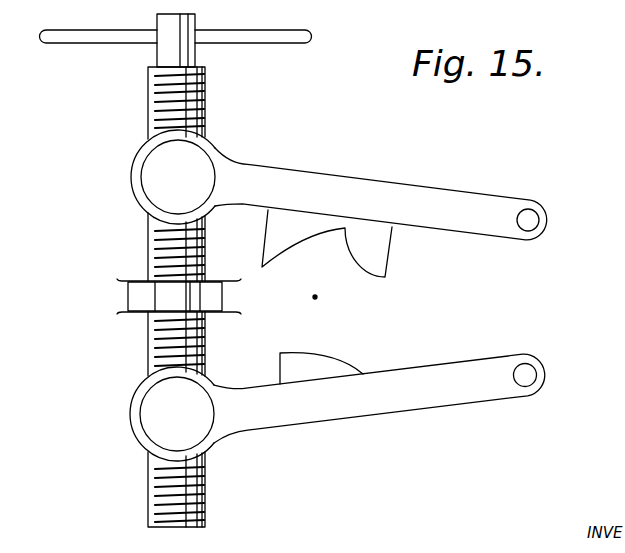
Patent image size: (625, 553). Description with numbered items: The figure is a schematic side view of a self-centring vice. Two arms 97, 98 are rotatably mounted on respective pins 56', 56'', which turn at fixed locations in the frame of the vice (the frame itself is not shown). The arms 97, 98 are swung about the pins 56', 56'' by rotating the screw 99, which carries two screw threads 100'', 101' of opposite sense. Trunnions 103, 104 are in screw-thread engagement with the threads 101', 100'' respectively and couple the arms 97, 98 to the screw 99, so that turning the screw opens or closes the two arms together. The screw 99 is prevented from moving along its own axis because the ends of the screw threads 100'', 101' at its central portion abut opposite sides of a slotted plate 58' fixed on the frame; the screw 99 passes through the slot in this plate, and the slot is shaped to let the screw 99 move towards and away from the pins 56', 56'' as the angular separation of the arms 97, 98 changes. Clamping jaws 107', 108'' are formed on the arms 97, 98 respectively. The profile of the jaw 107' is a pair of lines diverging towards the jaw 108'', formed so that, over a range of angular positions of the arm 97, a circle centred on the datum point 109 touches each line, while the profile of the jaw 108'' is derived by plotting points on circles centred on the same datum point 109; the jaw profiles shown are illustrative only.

The screw 99 is at (158, 98).
The trunnion 103 is at (156, 173).
The arm 97 is at (354, 188).
The pin 56' is at (528, 195).
The screw thread 101' is at (145, 247).
The clamping jaw 107' is at (357, 246).
The slotted plate 58' is at (150, 292).
The datum point 109 is at (315, 297).
The screw thread 100'' is at (130, 344).
The clamping jaw 108'' is at (352, 357).
The trunnion 104 is at (156, 410).
The arm 98 is at (297, 416).
The pin 56'' is at (531, 351).